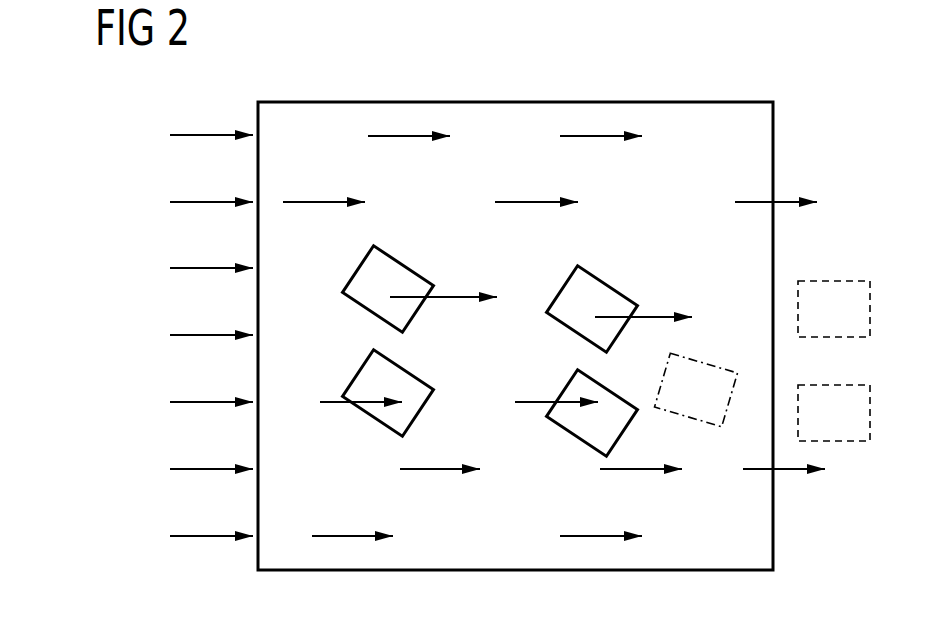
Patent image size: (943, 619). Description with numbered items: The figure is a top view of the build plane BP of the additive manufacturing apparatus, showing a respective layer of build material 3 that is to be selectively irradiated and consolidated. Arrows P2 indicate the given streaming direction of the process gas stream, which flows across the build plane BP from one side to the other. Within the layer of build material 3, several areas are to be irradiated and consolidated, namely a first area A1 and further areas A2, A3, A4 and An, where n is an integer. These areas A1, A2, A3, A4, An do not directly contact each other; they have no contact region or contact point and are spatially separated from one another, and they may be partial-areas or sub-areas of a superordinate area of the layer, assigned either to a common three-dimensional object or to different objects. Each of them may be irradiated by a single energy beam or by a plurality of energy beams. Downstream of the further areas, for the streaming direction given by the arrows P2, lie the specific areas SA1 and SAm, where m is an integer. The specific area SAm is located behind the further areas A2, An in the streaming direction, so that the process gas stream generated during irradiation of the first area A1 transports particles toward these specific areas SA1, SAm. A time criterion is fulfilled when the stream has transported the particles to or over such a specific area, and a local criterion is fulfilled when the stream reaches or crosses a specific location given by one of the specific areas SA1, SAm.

The arrows indicating streaming direction P2 is at (188, 268).
The build plane BP is at (635, 100).
The build material 3 is at (720, 118).
The first area A1 is at (395, 272).
The further area A2 is at (598, 293).
The further area A3 is at (388, 415).
The further area A4 is at (578, 428).
The n-th further area An is at (710, 370).
The specific area SA1 is at (841, 280).
The m-th specific area SAm is at (841, 442).